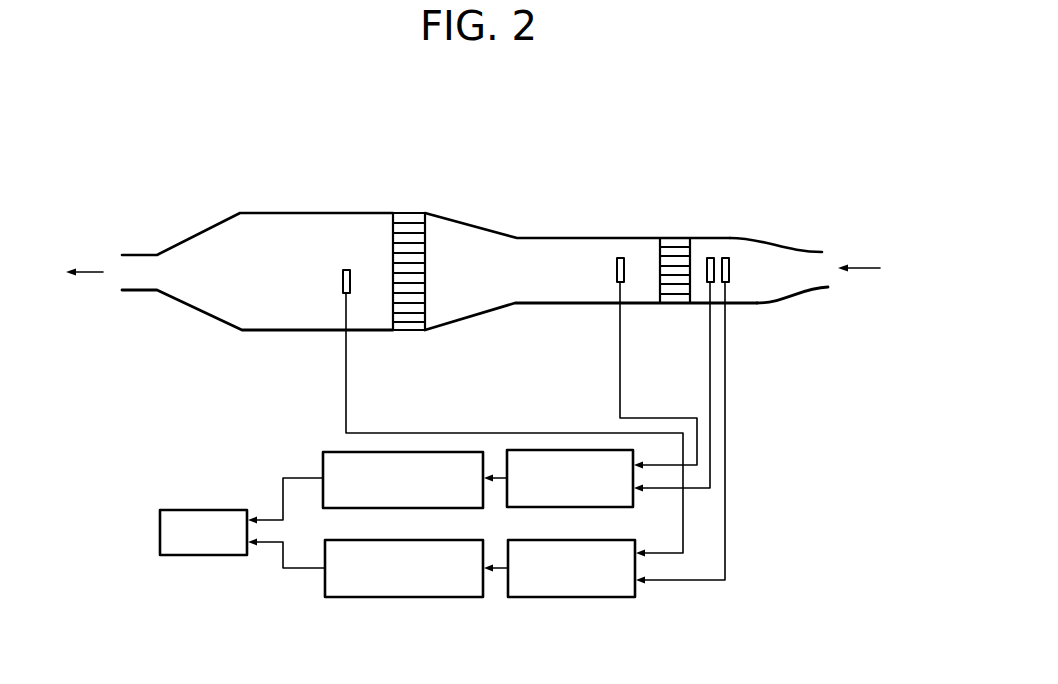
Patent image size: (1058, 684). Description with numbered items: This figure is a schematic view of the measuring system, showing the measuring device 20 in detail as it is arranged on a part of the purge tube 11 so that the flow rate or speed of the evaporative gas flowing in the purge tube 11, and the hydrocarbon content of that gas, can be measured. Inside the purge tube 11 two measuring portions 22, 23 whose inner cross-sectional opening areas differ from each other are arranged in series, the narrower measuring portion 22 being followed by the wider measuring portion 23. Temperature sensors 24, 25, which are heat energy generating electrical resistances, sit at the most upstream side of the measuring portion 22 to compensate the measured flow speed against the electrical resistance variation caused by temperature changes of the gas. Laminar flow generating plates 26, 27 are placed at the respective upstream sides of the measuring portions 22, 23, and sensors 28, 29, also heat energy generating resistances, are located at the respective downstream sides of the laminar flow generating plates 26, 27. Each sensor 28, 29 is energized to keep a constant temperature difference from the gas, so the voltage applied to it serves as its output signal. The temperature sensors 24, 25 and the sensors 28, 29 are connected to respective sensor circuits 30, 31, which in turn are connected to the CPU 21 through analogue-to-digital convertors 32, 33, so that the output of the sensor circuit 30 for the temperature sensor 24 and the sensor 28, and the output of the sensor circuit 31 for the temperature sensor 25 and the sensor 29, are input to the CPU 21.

The purge tube 11 is at (772, 302).
The measuring device 20 is at (495, 186).
The CPU 21 is at (200, 508).
The measuring portion 22 is at (567, 237).
The measuring portion 23 is at (242, 212).
The temperature sensor 24 is at (710, 257).
The temperature sensor 25 is at (727, 257).
The laminar flow generating plate 26 is at (658, 253).
The laminar flow generating plate 27 is at (422, 235).
The sensor 28 is at (615, 260).
The sensor 29 is at (342, 283).
The sensor circuit 30 is at (568, 450).
The sensor circuit 31 is at (580, 597).
The analogue-to-digital convertor 32 is at (333, 450).
The analogue-to-digital convertor 33 is at (410, 600).